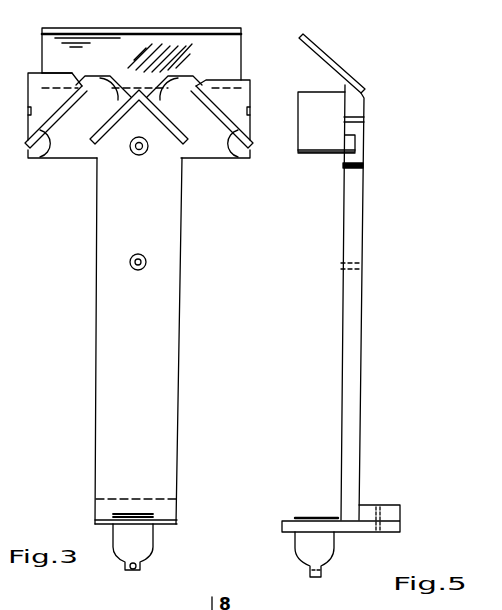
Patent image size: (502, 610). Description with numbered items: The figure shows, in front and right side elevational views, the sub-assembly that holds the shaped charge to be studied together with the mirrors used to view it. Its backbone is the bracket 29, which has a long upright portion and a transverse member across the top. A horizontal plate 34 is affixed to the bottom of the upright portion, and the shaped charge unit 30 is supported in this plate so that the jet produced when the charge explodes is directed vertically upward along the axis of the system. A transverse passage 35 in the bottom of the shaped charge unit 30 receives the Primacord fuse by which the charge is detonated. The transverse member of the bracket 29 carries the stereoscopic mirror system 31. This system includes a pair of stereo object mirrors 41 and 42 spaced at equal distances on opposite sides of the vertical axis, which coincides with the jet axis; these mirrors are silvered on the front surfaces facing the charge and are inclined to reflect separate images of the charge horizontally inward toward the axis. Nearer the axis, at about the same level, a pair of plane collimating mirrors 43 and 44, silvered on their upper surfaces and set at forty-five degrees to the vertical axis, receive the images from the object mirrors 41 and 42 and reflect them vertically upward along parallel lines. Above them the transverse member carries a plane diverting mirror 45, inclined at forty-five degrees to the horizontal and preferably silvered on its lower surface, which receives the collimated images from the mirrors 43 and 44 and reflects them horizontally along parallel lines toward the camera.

In FIG. 3, the bracket 29 is at (173, 383).
In FIG. 5, the bracket 29 is at (360, 395).
In FIG. 3, the shaped charge unit 30 is at (156, 544).
In FIG. 5, the shaped charge unit 30 is at (337, 550).
In FIG. 3, the stereoscopic mirror system 31 is at (58, 71).
In FIG. 5, the stereoscopic mirror system 31 is at (327, 155).
In FIG. 3, the horizontal plate 34 is at (177, 522).
In FIG. 5, the horizontal plate 34 is at (400, 530).
In FIG. 3, the transverse passage 35 is at (140, 567).
In FIG. 5, the transverse passage 35 is at (325, 570).
In FIG. 3, the stereo object mirror 41 is at (49, 157).
In FIG. 3, the stereo object mirror 42 is at (229, 158).
In FIG. 5, the stereo object mirror 42 is at (299, 128).
In FIG. 3, the plane collimating mirror 43 is at (98, 78).
In FIG. 3, the plane collimating mirror 44 is at (185, 78).
In FIG. 3, the plane diverting mirror 45 is at (242, 62).
In FIG. 5, the plane diverting mirror 45 is at (343, 66).